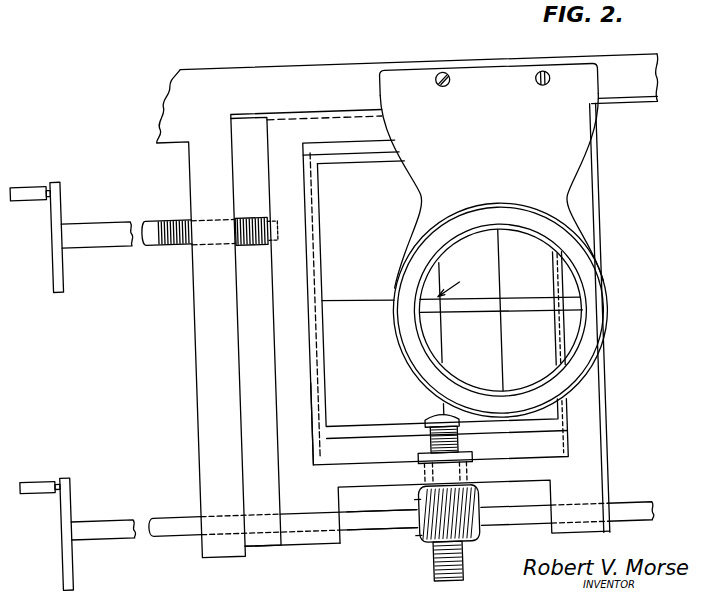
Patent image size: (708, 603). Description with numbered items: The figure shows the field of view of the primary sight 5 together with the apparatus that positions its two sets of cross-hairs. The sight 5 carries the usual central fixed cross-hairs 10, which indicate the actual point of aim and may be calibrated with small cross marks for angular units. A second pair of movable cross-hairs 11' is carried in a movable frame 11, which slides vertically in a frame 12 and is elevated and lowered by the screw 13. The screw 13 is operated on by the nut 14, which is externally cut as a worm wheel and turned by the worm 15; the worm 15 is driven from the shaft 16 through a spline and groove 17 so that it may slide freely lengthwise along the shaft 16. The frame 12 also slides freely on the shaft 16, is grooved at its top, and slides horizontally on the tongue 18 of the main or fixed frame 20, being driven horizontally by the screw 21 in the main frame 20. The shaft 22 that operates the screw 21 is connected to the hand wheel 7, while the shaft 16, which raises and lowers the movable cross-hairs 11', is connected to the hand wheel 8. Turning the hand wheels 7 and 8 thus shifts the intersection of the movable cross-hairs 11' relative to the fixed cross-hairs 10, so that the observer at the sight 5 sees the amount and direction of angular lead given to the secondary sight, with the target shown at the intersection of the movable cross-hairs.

The primary sight 5 is at (588, 283).
The hand wheel 7 is at (54, 242).
The hand wheel 8 is at (56, 504).
The central fixed cross-hairs 10 is at (503, 316).
The movable frame 11 is at (360, 302).
The movable cross-hairs 11' is at (272, 385).
The frame 12 is at (291, 331).
The screw 13 is at (450, 443).
The nut 14 is at (460, 539).
The worm 15 is at (409, 534).
The shaft 16 is at (110, 525).
The spline and groove 17 is at (396, 525).
The tongue 18 is at (616, 109).
The main frame 20 is at (338, 76).
The screw 21 is at (187, 238).
The shaft 22 is at (120, 234).